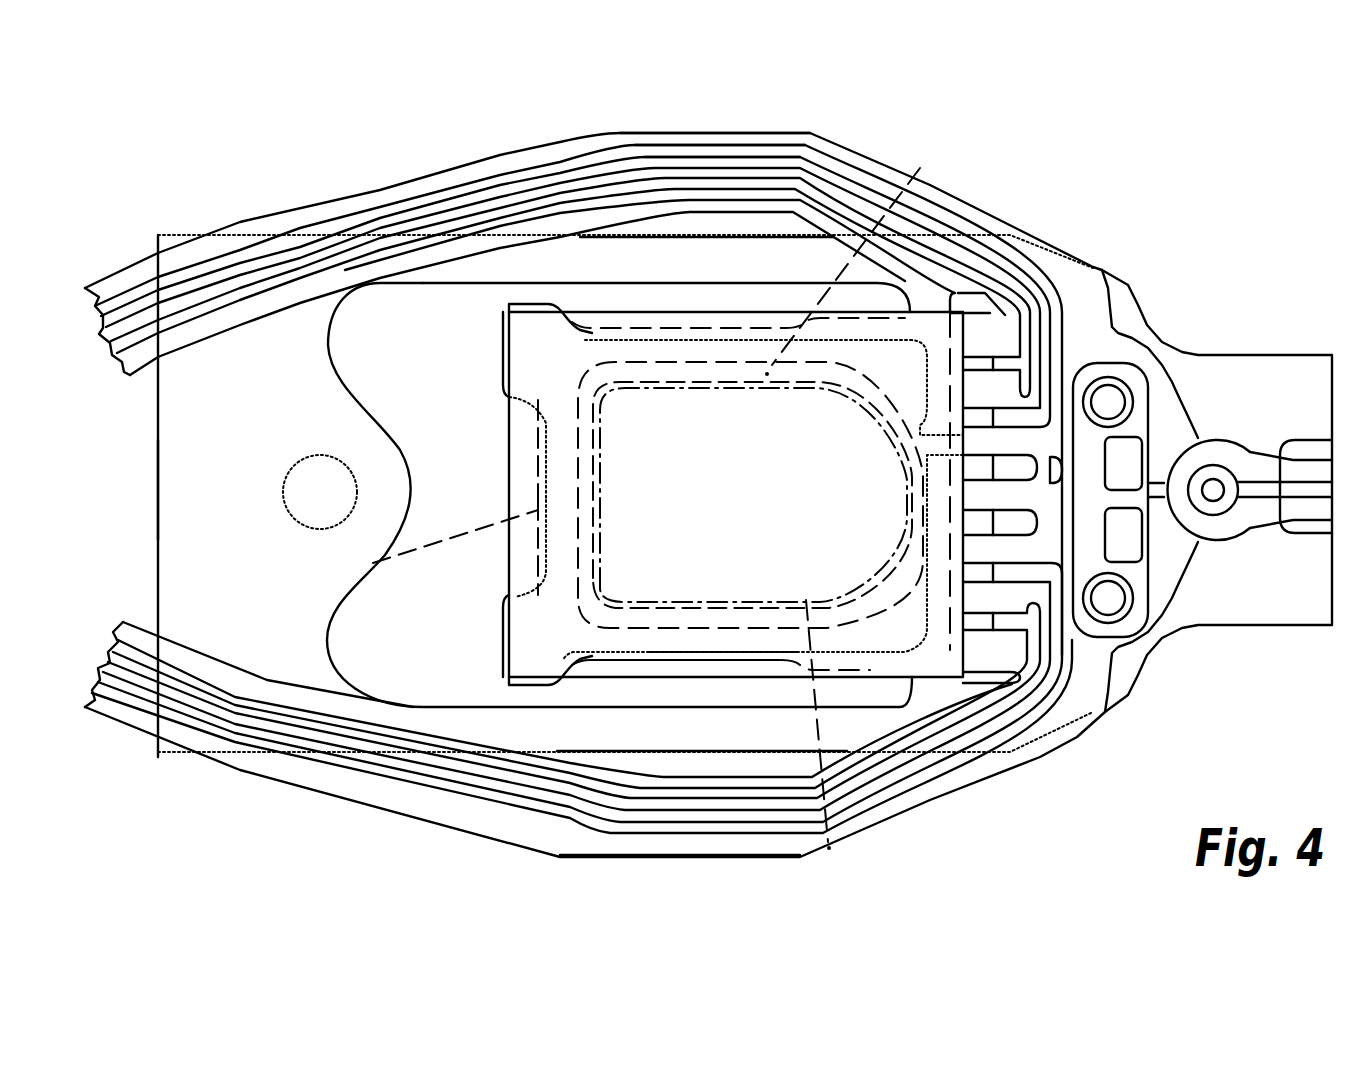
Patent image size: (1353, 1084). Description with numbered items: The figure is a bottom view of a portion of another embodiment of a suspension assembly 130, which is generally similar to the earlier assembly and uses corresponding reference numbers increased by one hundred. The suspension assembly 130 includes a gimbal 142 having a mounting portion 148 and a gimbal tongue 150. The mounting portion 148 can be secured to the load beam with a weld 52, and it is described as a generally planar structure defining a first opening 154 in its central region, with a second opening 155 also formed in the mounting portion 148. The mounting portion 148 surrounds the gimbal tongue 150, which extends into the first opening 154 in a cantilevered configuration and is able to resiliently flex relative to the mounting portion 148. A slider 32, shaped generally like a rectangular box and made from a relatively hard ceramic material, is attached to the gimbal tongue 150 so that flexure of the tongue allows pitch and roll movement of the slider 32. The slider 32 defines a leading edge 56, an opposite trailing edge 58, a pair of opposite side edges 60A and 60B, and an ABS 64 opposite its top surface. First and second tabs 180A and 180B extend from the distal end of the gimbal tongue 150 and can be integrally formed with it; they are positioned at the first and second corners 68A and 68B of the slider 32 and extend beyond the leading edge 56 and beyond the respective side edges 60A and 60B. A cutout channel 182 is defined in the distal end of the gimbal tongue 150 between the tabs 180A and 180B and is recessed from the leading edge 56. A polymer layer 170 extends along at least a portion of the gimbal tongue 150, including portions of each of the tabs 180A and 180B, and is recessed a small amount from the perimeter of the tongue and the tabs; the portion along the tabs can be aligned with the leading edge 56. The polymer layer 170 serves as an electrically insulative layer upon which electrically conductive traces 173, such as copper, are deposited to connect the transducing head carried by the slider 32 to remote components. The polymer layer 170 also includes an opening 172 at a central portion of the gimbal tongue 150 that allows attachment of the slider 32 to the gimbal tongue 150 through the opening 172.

The suspension assembly 130 is at (1150, 272).
The gimbal 142 is at (222, 420).
The mounting portion 148 is at (190, 483).
The weld 52 is at (283, 512).
The cutout channel 182 is at (367, 567).
The housing 154 is at (327, 647).
The polymer layer 170 is at (400, 190).
The opening 172 is at (833, 851).
The side edge 60A is at (663, 310).
The side edge 60B is at (580, 678).
The conductive traces 173 is at (745, 192).
The leading edge 56 is at (503, 642).
The first corner 68A is at (503, 313).
The second corner 68B is at (503, 677).
The first tab 180A is at (503, 380).
The second tab 180B is at (503, 610).
The gimbal tongue 150 is at (880, 670).
The second opening 155 is at (950, 650).
The trailing edge 58 is at (952, 676).
The slider 32 is at (655, 678).
The ABS 64 is at (717, 674).